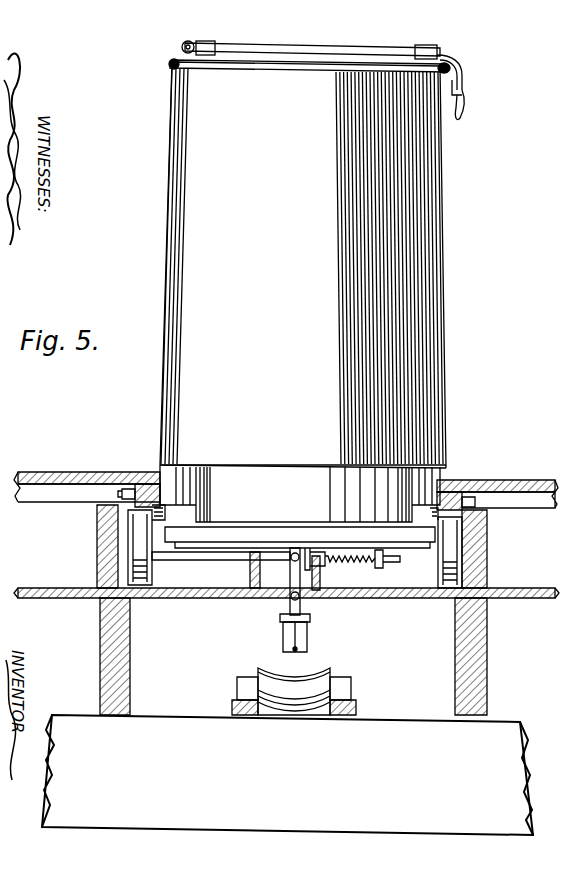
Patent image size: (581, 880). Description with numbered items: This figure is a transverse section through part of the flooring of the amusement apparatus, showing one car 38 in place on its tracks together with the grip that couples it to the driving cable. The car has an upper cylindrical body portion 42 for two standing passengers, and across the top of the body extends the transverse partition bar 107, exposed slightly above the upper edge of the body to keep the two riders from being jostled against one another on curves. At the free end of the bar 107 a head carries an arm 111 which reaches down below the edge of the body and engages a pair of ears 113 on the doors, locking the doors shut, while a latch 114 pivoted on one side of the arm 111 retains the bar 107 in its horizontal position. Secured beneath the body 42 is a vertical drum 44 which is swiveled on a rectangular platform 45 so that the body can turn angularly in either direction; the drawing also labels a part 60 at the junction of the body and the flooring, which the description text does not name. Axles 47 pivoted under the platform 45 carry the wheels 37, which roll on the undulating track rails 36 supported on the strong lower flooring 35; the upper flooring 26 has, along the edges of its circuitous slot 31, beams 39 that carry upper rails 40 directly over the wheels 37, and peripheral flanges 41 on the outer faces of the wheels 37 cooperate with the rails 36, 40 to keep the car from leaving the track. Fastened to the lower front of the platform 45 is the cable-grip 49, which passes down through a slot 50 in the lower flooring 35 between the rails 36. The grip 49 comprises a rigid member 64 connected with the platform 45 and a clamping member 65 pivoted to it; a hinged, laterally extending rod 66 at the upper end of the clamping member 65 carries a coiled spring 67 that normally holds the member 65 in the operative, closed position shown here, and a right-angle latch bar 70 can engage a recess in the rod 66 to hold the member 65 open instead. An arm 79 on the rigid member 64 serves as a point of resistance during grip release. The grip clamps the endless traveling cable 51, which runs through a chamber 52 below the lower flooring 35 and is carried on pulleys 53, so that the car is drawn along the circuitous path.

The transverse partition bar 107 is at (295, 58).
The arm 111 is at (468, 78).
The ears 113 is at (463, 94).
The latch 114 is at (466, 115).
The cylindrical body portion 42 is at (303, 265).
The vertical drum 44 is at (303, 493).
The collar 60 is at (178, 480).
The car 38 is at (462, 406).
The flooring 26 is at (87, 477).
The beams 39 is at (140, 484).
The slot 31 is at (165, 480).
The track rails 36 is at (176, 598).
The peripheral flanges 41 is at (128, 538).
The wheels 37 is at (126, 552).
The upper rails 40 is at (295, 516).
The lower flooring 35 is at (520, 590).
The platform 45 is at (222, 542).
The axles 47 is at (205, 555).
The arm 79 is at (290, 618).
The rigid member 64 is at (305, 648).
The cable-grip 49 is at (283, 646).
The clamping member 65 is at (283, 640).
The slot 50 is at (340, 568).
The rod 66 is at (388, 575).
The coiled spring 67 is at (330, 595).
The latch bar 70 is at (375, 598).
The chamber 52 is at (420, 598).
The pulleys 53 is at (335, 665).
The endless traveling cable 51 is at (258, 670).